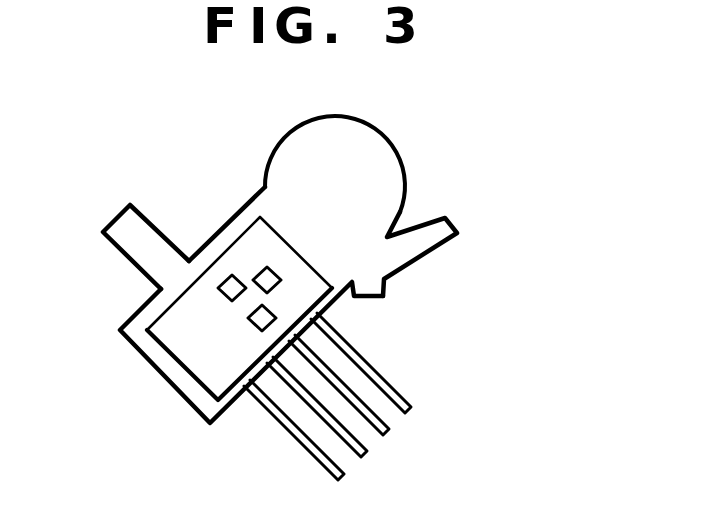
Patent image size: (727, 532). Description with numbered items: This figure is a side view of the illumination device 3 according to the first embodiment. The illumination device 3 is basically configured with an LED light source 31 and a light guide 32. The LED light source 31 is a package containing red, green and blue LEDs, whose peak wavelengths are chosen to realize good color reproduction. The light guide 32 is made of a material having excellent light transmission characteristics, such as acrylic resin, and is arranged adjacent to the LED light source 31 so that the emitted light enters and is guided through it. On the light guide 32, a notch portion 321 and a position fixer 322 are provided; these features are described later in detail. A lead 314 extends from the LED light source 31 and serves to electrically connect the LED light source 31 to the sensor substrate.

The illumination device 3 is at (513, 286).
The LED light source 31 is at (188, 323).
The light guide 32 is at (372, 143).
The notch portion 321 is at (376, 286).
The position fixer 322 is at (131, 230).
The lead 314 is at (294, 433).